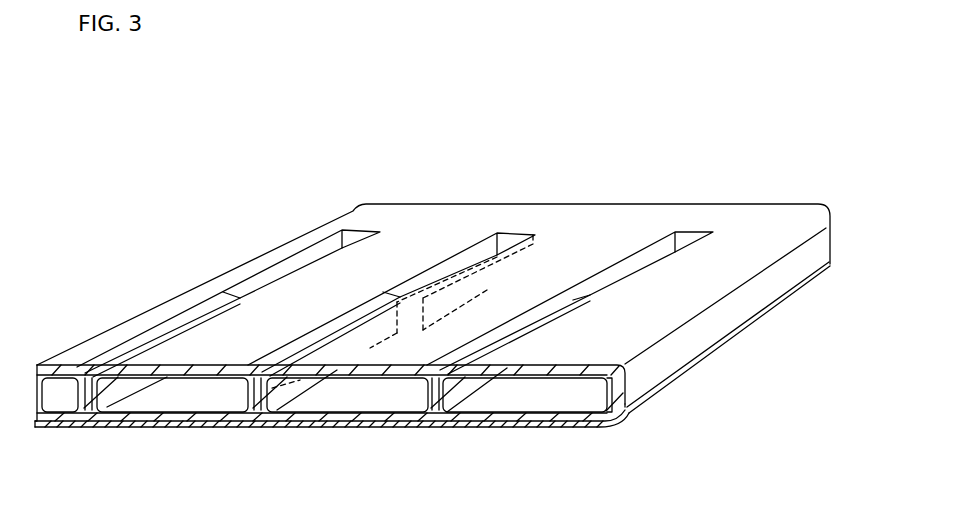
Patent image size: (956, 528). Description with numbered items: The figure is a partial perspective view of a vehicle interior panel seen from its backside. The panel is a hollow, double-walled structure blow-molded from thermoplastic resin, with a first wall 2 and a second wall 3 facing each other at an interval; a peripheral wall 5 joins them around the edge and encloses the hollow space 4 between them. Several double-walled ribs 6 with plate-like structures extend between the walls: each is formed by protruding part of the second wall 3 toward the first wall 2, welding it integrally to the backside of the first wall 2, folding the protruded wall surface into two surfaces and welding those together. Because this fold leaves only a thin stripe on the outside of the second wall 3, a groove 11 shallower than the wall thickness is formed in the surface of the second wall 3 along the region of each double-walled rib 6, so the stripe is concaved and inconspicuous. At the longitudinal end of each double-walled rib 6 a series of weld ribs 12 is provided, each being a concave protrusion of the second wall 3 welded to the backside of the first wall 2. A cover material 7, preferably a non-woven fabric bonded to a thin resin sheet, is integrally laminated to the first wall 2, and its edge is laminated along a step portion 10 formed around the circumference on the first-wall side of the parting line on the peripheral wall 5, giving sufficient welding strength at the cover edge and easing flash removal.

The first wall 2 is at (568, 423).
The second wall 3 is at (550, 228).
The hollow space 4 is at (364, 392).
The peripheral wall 5 is at (735, 307).
The double-walled rib 6 is at (109, 390).
The cover material 7 is at (530, 423).
The step portion 10 is at (624, 415).
The groove 11 is at (160, 328).
The weld rib 12 is at (293, 265).